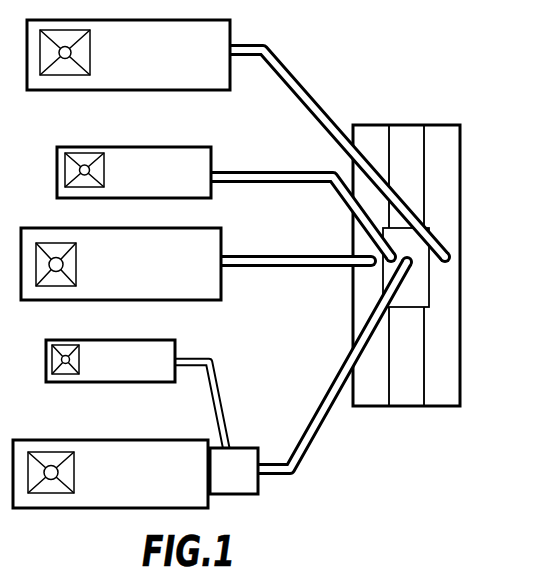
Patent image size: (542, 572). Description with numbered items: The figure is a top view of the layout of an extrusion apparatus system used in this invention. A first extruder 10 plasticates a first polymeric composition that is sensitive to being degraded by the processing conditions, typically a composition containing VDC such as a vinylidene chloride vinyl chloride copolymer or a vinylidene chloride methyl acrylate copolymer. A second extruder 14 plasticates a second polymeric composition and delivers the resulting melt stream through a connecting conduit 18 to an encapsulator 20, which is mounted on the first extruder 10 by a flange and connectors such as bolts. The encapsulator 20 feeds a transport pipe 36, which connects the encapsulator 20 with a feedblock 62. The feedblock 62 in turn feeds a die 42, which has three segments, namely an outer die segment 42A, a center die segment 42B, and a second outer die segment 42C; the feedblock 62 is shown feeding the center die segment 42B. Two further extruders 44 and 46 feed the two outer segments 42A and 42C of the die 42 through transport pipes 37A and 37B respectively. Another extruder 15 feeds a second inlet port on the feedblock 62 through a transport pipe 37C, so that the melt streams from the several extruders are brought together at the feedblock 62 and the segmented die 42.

The first extruder 10 is at (127, 486).
The second extruder 14 is at (118, 374).
The extruder 15 is at (152, 186).
The connecting conduit 18 is at (212, 402).
The encapsulator 20 is at (226, 497).
The transport pipe 36 is at (305, 457).
The transport pipe 37A is at (297, 76).
The transport pipe 37B is at (236, 253).
The transport pipe 37C is at (236, 170).
The die 42 is at (416, 119).
The die segment 42A is at (367, 408).
The center die segment 42B is at (403, 408).
The die segment 42C is at (435, 408).
The extruder 44 is at (140, 67).
The extruder 46 is at (128, 277).
The feedblock 62 is at (427, 292).